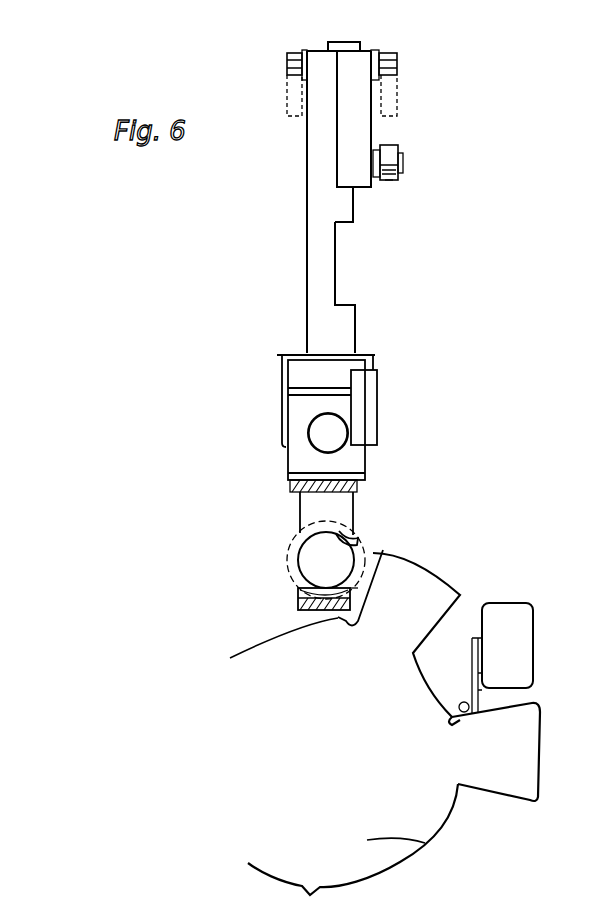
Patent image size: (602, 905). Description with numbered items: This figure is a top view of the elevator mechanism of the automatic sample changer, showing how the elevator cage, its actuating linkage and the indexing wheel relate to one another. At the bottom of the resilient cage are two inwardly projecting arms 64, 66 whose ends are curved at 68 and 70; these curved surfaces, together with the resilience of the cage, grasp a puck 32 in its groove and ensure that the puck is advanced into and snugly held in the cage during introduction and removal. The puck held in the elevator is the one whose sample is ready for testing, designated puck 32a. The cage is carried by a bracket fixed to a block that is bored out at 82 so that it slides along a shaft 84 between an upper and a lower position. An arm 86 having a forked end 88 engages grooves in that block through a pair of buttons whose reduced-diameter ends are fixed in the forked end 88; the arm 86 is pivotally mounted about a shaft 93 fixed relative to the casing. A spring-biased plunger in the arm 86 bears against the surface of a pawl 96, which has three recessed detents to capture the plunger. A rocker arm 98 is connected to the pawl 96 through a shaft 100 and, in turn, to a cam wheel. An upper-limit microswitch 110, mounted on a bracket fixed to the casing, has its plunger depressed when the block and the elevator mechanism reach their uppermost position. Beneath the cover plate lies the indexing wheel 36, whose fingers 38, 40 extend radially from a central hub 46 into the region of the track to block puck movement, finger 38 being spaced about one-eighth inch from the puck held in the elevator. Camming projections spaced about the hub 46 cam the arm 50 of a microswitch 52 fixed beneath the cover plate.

The puck 32 is at (317, 553).
The puck 32a is at (292, 563).
The indexing wheel 36 is at (345, 710).
The finger 38 is at (437, 588).
The finger 40 is at (507, 765).
The central hub 46 is at (420, 838).
The arm 50 is at (497, 688).
The microswitch 52 is at (502, 628).
The arm 64 is at (322, 505).
The arm 66 is at (292, 592).
The convex surface 68 is at (353, 545).
The convex surface 70 is at (330, 590).
The bore 82 is at (309, 427).
The shaft 84 is at (327, 434).
The arm 86 is at (329, 240).
The forked end 88 is at (283, 354).
The shaft 93 is at (398, 75).
The pawl 96 is at (357, 68).
The rocker arm 98 is at (389, 178).
The shaft 100 is at (403, 158).
The upper-limit microswitch 110 is at (365, 393).